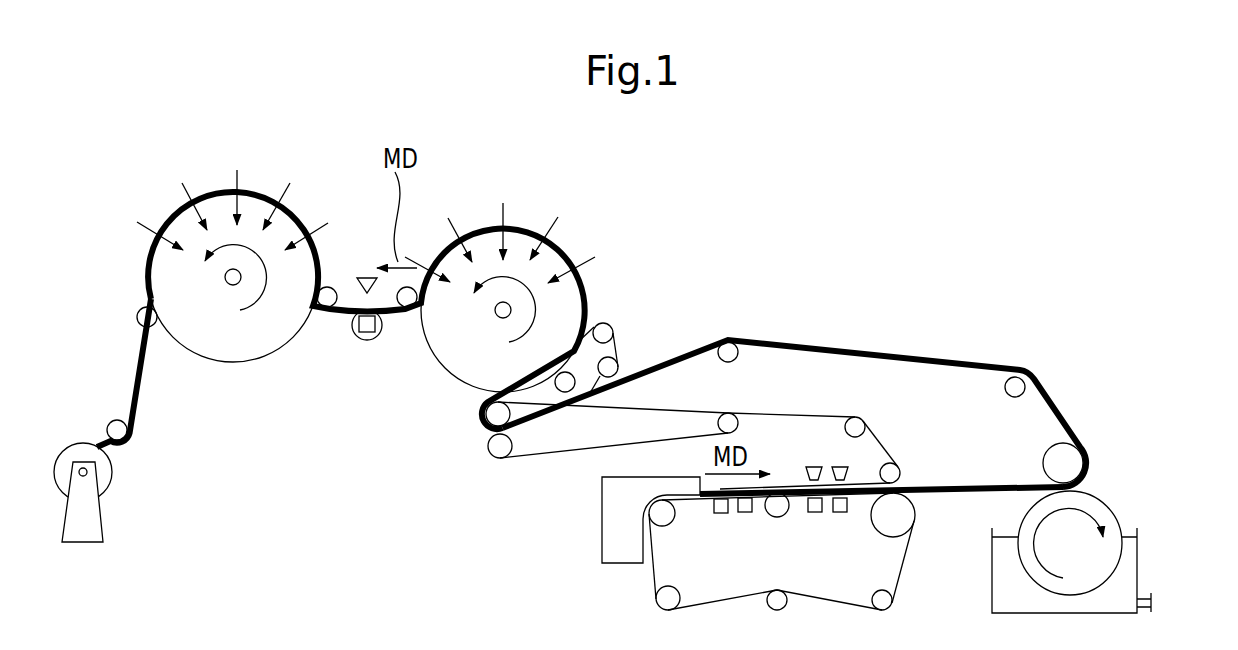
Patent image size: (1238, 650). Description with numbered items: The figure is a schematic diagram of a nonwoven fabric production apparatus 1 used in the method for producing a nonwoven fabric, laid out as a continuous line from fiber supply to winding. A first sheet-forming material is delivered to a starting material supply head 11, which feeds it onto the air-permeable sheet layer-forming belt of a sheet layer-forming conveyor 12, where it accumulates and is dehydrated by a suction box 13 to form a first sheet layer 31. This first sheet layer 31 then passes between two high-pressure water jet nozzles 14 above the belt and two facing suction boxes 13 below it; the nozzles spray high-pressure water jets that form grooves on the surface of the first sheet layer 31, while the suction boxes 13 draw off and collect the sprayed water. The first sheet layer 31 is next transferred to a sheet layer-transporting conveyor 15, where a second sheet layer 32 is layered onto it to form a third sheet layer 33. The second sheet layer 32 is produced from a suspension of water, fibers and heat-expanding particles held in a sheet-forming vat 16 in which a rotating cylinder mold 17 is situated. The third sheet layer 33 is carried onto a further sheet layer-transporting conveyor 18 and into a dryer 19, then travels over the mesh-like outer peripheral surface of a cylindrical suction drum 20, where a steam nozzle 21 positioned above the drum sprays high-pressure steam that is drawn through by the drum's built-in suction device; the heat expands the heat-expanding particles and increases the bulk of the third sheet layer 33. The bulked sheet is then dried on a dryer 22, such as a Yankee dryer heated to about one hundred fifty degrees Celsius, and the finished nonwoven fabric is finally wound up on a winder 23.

The nonwoven fabric production apparatus 1 is at (1118, 318).
The starting material supply head 11 is at (601, 540).
The sheet layer-forming conveyor 12 is at (656, 584).
The suction box 13 is at (840, 512).
The high-pressure water jet nozzle 14 is at (840, 467).
The sheet layer-transporting conveyor 15 is at (543, 455).
The sheet-forming vat 16 is at (1138, 560).
The rotating cylinder mold 17 is at (1087, 508).
The sheet layer-transporting conveyor 18 is at (620, 350).
The dryer 19 is at (563, 290).
The suction drum 20 is at (367, 340).
The steam nozzle 21 is at (367, 277).
The dryer 22 is at (166, 270).
The winder 23 is at (112, 472).
The first sheet layer 31 is at (937, 495).
The second sheet layer 32 is at (1017, 517).
The third sheet layer 33 is at (903, 352).